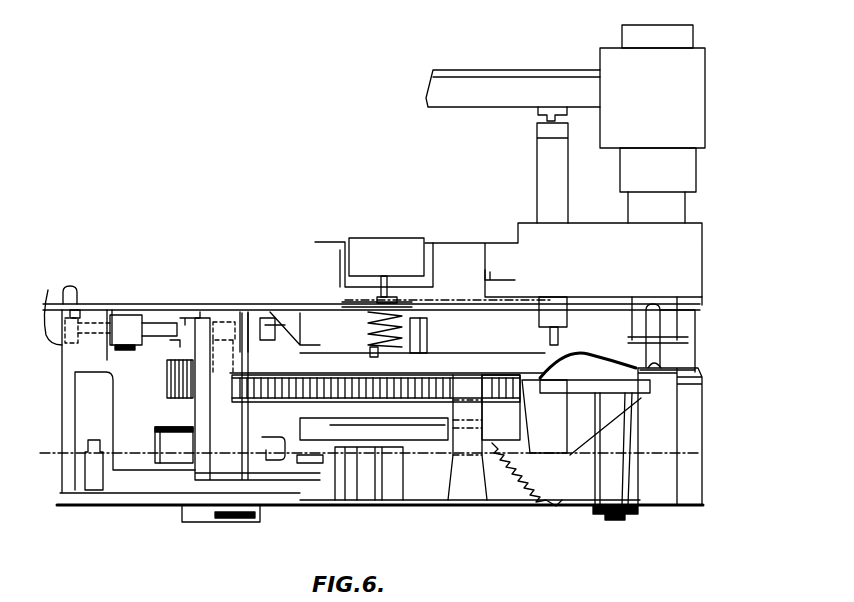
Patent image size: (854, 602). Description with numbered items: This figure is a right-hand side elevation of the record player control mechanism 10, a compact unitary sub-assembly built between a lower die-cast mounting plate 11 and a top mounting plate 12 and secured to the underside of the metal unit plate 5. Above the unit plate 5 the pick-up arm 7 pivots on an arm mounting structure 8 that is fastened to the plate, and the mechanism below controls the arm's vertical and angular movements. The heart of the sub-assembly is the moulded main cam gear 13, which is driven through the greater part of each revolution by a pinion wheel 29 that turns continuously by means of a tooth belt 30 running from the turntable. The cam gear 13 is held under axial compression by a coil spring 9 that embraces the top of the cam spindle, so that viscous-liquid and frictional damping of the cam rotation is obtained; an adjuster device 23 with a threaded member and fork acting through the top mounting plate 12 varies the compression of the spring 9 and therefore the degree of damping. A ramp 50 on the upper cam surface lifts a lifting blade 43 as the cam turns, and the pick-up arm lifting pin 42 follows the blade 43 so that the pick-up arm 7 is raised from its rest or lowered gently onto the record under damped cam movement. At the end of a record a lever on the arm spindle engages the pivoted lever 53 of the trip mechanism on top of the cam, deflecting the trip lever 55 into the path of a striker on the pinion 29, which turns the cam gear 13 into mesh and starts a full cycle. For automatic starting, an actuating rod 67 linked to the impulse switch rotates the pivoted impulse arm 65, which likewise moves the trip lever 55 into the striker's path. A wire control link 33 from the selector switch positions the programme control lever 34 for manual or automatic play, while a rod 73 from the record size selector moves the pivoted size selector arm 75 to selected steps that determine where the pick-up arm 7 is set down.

The unit plate 5 is at (462, 298).
The pick-up arm 7 is at (457, 88).
The arm mounting structure 8 is at (680, 278).
The coil spring 9 is at (370, 343).
The control mechanism 10 is at (510, 505).
The lower die-cast mounting plate 11 is at (150, 497).
The top mounting plate 12 is at (330, 340).
The main cam gear 13 is at (508, 387).
The adjuster device 23 is at (372, 238).
The pinion wheel 29 is at (167, 396).
The tooth belt 30 is at (163, 445).
The wire control link 33 is at (162, 343).
The programme control lever 34 is at (200, 325).
The pick-up arm lifting pin 42 is at (560, 345).
The lifting blade 43 is at (600, 372).
The ramp 50 is at (535, 372).
The pivoted lever 53 is at (430, 323).
The trip lever 55 is at (280, 332).
The impulse arm 65 is at (153, 325).
The actuating rod 67 is at (48, 300).
The rod 73 is at (272, 462).
The size selector arm 75 is at (355, 455).